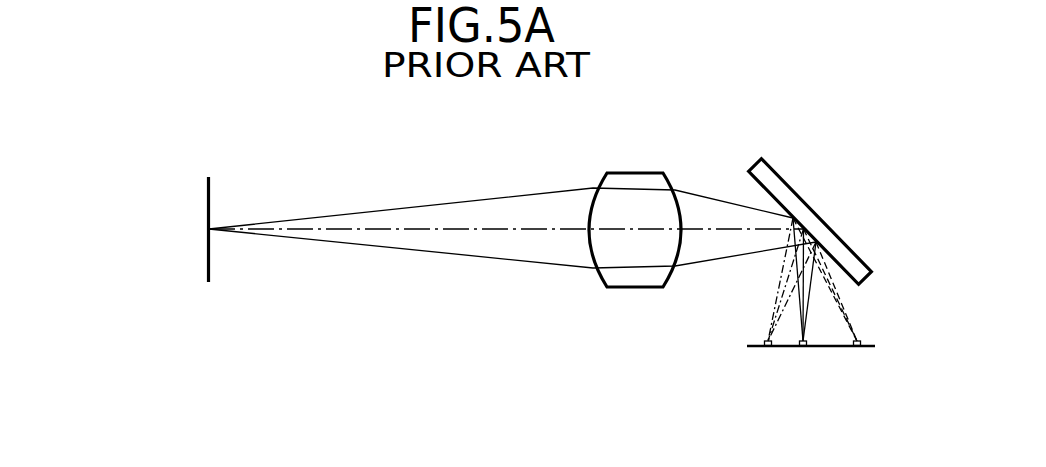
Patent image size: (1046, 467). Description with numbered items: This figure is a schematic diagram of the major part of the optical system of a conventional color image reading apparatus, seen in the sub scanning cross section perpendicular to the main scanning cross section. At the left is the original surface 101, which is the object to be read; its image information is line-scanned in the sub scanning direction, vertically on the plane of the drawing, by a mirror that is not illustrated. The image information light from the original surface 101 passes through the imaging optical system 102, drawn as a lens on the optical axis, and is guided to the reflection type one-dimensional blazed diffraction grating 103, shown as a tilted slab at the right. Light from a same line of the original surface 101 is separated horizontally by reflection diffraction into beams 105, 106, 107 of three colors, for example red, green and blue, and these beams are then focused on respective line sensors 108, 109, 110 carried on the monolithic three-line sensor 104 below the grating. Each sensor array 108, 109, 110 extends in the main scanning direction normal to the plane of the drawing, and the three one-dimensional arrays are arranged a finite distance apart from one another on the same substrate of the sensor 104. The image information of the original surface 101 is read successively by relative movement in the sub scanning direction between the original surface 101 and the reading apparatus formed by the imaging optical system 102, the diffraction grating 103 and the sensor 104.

The original surface 101 is at (211, 185).
The imaging optical system 102 is at (635, 173).
The reflection type one-dimensional blazed diffraction grating 103 is at (812, 205).
The monolithic 3-line sensor 104 is at (873, 349).
The beam 105 is at (771, 313).
The beam 106 is at (800, 350).
The beam 107 is at (841, 299).
The line sensor 108 is at (763, 349).
The line sensor 109 is at (806, 349).
The line sensor 110 is at (858, 349).